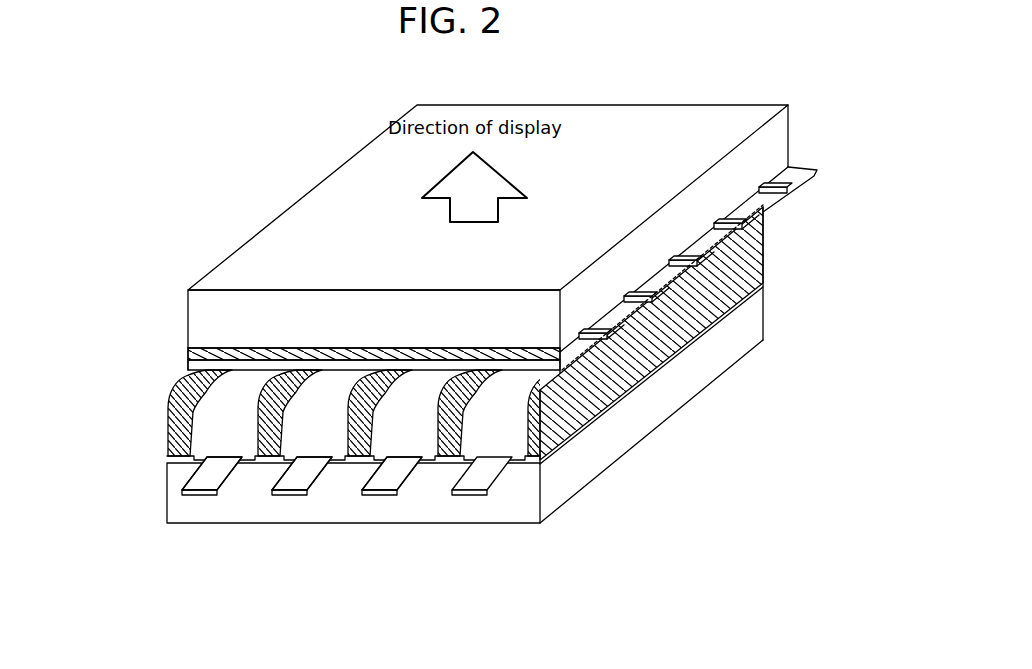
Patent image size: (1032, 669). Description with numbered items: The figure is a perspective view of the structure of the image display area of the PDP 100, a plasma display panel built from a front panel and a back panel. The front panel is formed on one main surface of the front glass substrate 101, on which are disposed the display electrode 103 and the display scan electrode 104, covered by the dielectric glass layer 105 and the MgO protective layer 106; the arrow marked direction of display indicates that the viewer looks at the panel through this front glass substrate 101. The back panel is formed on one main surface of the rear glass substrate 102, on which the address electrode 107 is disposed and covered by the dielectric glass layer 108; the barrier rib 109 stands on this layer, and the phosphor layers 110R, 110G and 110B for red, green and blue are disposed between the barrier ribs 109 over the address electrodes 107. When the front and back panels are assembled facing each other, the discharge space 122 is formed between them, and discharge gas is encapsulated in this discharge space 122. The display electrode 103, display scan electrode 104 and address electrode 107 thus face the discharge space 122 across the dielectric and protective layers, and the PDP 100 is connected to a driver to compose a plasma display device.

The PDP 100 is at (773, 309).
The front glass substrate 101 is at (187, 298).
The rear glass substrate 102 is at (428, 513).
The display electrode 103 is at (622, 297).
The display scan electrode 104 is at (768, 232).
The dielectric glass layer 105 is at (187, 355).
The MgO protective layer 106 is at (187, 368).
The address electrode 107 is at (207, 480).
The dielectric glass layer 108 is at (172, 460).
The barrier rib 109 is at (435, 418).
The phosphor layer 110R is at (172, 487).
The phosphor layer 110G is at (278, 497).
The phosphor layer 110B is at (390, 470).
The discharge space 122 is at (495, 388).